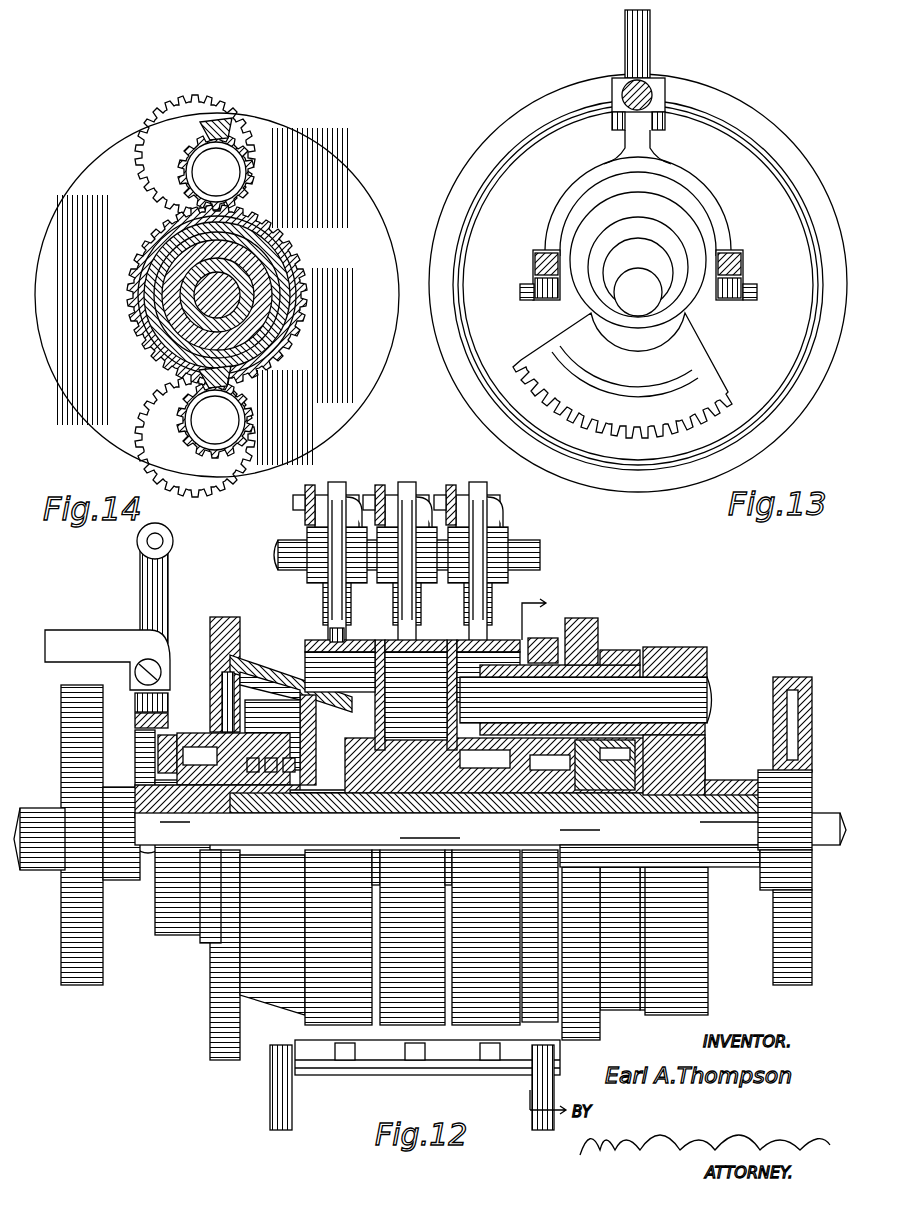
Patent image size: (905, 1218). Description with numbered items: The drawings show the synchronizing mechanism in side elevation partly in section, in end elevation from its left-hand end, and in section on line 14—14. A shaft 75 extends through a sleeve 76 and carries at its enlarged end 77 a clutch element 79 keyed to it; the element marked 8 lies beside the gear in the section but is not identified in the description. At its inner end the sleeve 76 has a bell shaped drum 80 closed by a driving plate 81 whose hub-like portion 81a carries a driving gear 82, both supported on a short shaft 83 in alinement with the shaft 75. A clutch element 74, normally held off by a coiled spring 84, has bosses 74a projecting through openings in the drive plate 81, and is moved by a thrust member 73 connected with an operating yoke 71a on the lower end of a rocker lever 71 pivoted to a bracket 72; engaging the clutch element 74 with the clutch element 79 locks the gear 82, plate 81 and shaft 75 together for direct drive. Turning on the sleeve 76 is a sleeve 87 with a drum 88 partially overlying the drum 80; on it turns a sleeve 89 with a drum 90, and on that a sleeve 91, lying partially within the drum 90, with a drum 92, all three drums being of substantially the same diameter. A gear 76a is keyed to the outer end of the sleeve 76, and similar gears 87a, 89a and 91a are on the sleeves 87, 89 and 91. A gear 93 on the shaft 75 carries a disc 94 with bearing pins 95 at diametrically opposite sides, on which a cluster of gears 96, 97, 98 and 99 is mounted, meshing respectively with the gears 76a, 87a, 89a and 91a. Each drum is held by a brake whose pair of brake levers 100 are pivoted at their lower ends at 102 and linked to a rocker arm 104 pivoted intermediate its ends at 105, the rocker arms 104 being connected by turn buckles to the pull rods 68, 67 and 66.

In FIG. 14, the gear rim ring 8 is at (194, 295).
In FIG. 12, the section line 14— 14 is at (556, 855).
In FIG. 12, the pull rod 66 is at (505, 503).
In FIG. 12, the pull rod 67 is at (424, 495).
In FIG. 12, the pull rod 68 is at (352, 495).
In FIG. 13, the rocker lever 71 is at (650, 40).
In FIG. 12, the rocker lever 71 is at (145, 578).
In FIG. 13, the operating yoke 71a is at (712, 205).
In FIG. 12, the operating yoke 71a is at (136, 752).
In FIG. 13, the bracket 72 is at (662, 82).
In FIG. 12, the bracket 72 is at (85, 630).
In FIG. 13, the clutch thrust member 73 is at (645, 232).
In FIG. 12, the clutch thrust member 73 is at (156, 905).
In FIG. 12, the clutch element 74 is at (222, 690).
In FIG. 12, the bosses 74a is at (196, 733).
In FIG. 14, the shaft 75 is at (180, 290).
In FIG. 12, the shaft 75 is at (820, 808).
In FIG. 14, the sleeve 76 is at (250, 295).
In FIG. 12, the sleeve 76 is at (500, 800).
In FIG. 12, the gear 76a is at (690, 760).
In FIG. 12, the enlarged end 77 is at (320, 815).
In FIG. 12, the clutch element 79 is at (250, 658).
In FIG. 12, the bell shaped drum 80 is at (305, 672).
In FIG. 13, the driving plate 81 is at (740, 165).
In FIG. 12, the driving plate 81 is at (210, 668).
In FIG. 12, the hub-like portion 81a is at (217, 810).
In FIG. 13, the driving gear 82 is at (622, 375).
In FIG. 12, the driving gear 82 is at (60, 730).
In FIG. 13, the short shaft 83 is at (638, 292).
In FIG. 12, the short shaft 83 is at (32, 808).
In FIG. 12, the coiled spring 84 is at (290, 768).
In FIG. 14, the sleeve 87 is at (275, 280).
In FIG. 12, the sleeve 87 is at (388, 798).
In FIG. 12, the gear 87a is at (612, 798).
In FIG. 12, the drum 88 is at (372, 650).
In FIG. 14, the sleeve 89 is at (290, 258).
In FIG. 12, the sleeve 89 is at (428, 798).
In FIG. 12, the gear 89a is at (545, 798).
In FIG. 12, the drum 90 is at (416, 832).
In FIG. 12, the sleeve 91 is at (420, 740).
In FIG. 14, the gear 91a is at (145, 240).
In FIG. 12, the gear 91a is at (478, 798).
In FIG. 12, the drum 92 is at (452, 648).
In FIG. 12, the gear 93 is at (774, 715).
In FIG. 14, the disc 94 is at (350, 190).
In FIG. 12, the disc 94 is at (700, 905).
In FIG. 14, the bearing pins 95 is at (222, 170).
In FIG. 12, the bearing pins 95 is at (660, 665).
In FIG. 14, the gear 96 is at (240, 150).
In FIG. 12, the gear 96 is at (616, 650).
In FIG. 14, the gear 97 is at (222, 110).
In FIG. 12, the gear 97 is at (580, 622).
In FIG. 14, the gear 98 is at (232, 120).
In FIG. 12, the gear 98 is at (545, 648).
In FIG. 14, the gear 99 is at (232, 168).
In FIG. 12, the gear 99 is at (586, 700).
In FIG. 12, the brake levers 100 is at (330, 640).
In FIG. 12, the pivot 102 is at (338, 1075).
In FIG. 12, the rocker arm 104 is at (318, 560).
In FIG. 12, the pivot 105 is at (540, 553).